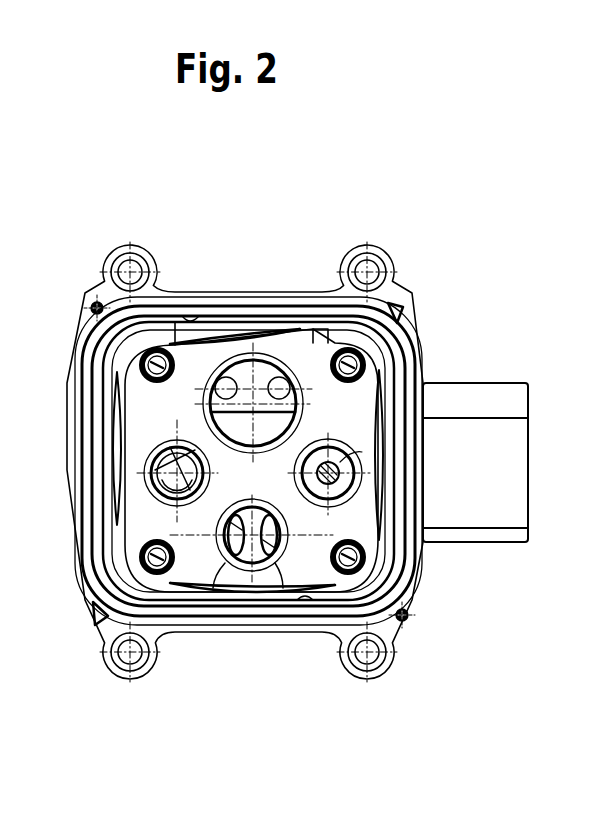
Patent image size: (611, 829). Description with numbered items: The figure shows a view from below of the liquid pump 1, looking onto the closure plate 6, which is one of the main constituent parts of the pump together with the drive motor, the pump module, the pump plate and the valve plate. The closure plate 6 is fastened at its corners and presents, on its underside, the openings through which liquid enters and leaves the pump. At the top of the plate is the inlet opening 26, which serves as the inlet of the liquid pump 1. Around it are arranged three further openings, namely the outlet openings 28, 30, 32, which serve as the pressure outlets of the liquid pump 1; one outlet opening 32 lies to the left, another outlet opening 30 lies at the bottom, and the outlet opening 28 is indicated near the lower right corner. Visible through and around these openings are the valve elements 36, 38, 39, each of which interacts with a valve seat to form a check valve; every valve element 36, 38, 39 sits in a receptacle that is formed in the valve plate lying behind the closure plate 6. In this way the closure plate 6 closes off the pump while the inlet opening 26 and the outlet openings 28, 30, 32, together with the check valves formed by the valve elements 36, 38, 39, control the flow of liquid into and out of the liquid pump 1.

The liquid pump 1 is at (306, 200).
The closure plate 6 is at (352, 404).
The inlet opening 26 is at (246, 385).
The outlet opening 28 is at (368, 528).
The outlet opening 30 is at (243, 568).
The outlet opening 32 is at (156, 457).
The valve element 36 is at (225, 563).
The valve element 38 is at (220, 372).
The valve element 39 is at (272, 376).